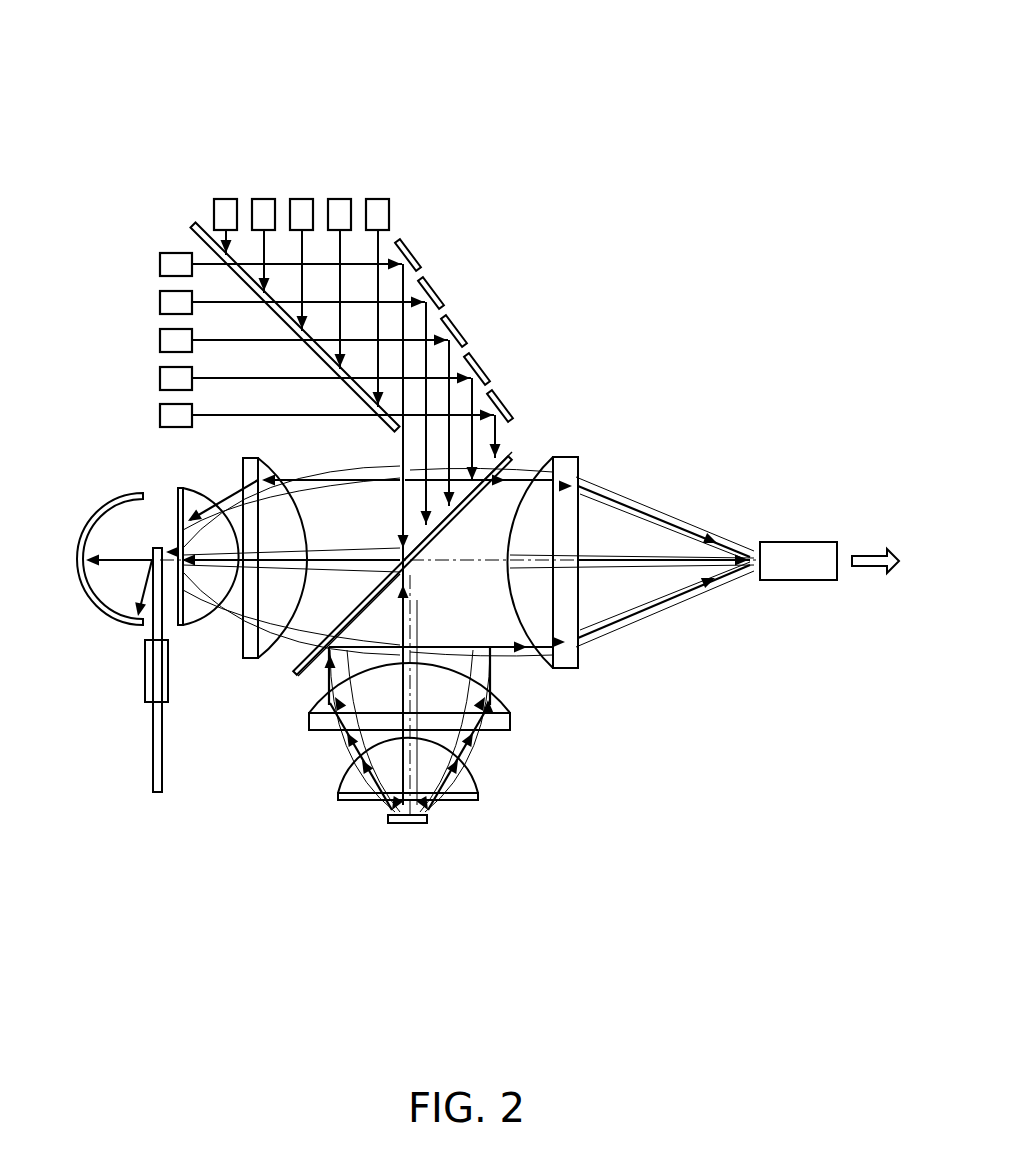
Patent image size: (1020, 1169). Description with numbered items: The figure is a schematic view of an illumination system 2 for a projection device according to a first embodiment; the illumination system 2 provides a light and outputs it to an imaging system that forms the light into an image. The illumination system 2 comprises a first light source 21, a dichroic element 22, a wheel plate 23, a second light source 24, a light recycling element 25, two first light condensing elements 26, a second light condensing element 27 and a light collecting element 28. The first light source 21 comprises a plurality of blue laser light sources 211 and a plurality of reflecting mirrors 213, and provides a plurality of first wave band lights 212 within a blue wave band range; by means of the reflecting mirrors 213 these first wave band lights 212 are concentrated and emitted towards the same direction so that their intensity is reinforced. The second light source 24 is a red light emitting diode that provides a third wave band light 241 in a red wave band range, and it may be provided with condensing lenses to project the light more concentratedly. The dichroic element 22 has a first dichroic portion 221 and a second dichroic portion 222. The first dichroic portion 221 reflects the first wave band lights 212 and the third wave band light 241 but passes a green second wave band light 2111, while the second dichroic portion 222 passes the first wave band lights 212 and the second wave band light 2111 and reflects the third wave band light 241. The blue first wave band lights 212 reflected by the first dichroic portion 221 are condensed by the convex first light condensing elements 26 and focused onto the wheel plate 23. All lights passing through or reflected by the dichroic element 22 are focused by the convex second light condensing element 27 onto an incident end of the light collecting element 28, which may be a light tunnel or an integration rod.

The illumination system 2 is at (596, 34).
The first light source 21 is at (230, 116).
The blue laser light sources 211 is at (226, 210).
The first wave band lights 212 is at (217, 418).
The reflecting mirrors 213 is at (200, 232).
The second wave band light 2111 is at (660, 512).
The dichroic element 22 is at (293, 675).
The first dichroic portion 221 is at (507, 462).
The second dichroic portion 222 is at (325, 670).
The wheel plate 23 is at (160, 795).
The second light source 24 is at (409, 824).
The third wave band light 241 is at (490, 680).
The light recycling element 25 is at (100, 513).
The first light condensing elements 26 is at (185, 626).
The second light condensing element 27 is at (568, 664).
The light collecting element 28 is at (790, 581).